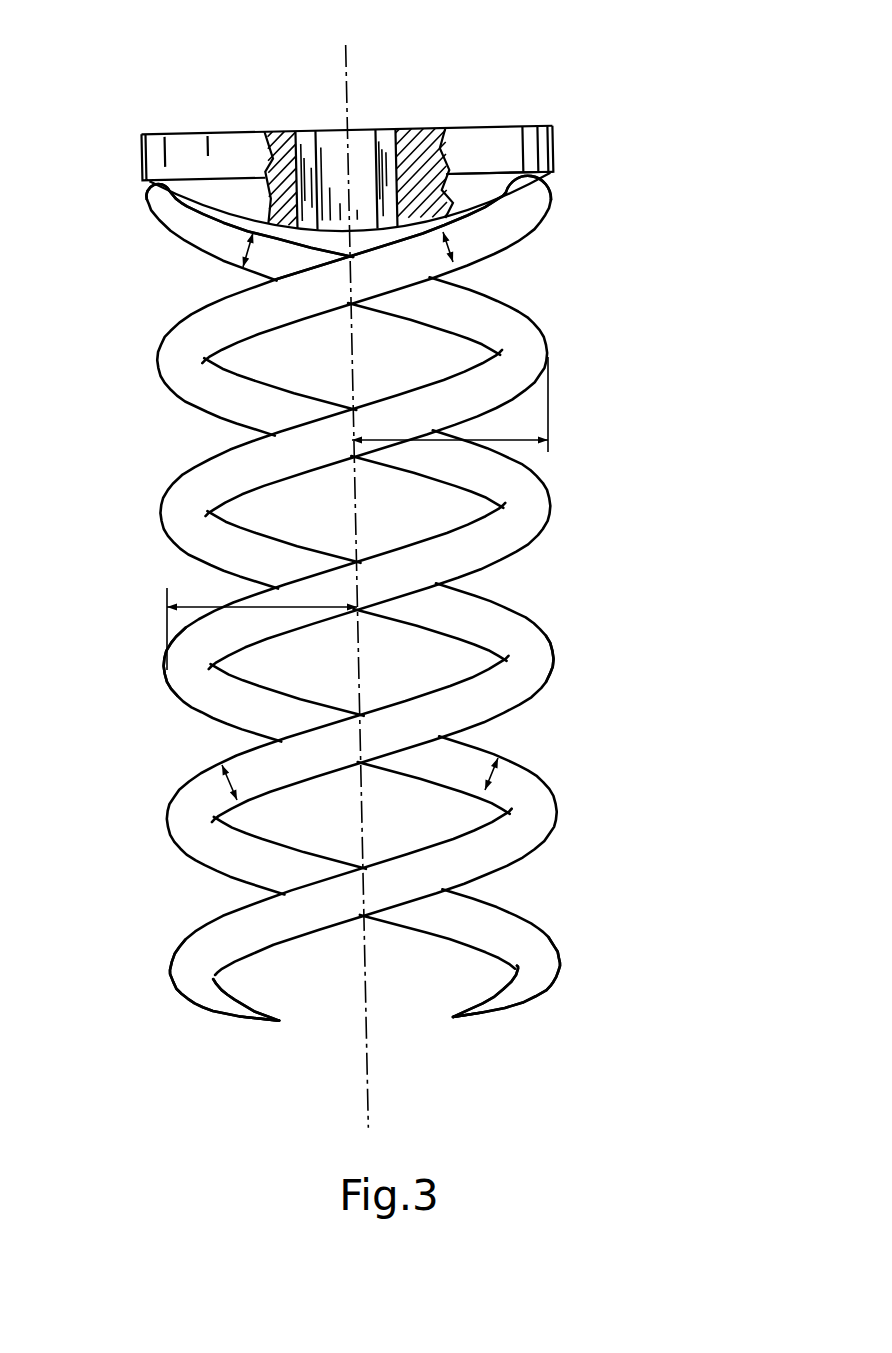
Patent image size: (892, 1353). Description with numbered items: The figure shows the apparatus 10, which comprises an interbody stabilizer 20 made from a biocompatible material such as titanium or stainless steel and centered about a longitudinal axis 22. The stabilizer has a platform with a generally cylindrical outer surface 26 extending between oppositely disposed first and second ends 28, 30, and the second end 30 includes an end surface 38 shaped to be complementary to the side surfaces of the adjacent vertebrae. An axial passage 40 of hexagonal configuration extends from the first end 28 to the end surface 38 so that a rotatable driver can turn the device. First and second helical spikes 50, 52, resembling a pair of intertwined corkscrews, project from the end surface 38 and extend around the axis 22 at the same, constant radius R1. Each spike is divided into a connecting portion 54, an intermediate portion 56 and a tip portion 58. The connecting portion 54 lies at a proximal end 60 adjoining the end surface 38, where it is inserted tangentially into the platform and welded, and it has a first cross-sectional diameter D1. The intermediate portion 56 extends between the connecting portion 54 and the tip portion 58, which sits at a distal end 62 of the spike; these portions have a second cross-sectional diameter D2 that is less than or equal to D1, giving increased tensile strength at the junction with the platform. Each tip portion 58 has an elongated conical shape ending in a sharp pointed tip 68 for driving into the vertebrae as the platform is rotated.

The apparatus 10 is at (627, 62).
The interbody stabilizer 20 is at (553, 160).
The longitudinal axis 22 is at (345, 66).
The generally cylindrical outer surface 26 is at (556, 140).
The first end 28 is at (532, 127).
The second end 30 is at (547, 174).
The end surface 38 is at (478, 192).
The axial passage 40 is at (364, 150).
The first helical spike 50 is at (191, 855).
The second helical spike 52 is at (558, 818).
The connecting portion 54 is at (515, 235).
The intermediate portion 56 is at (183, 672).
The tip portion 58 is at (497, 997).
The proximal end 60 is at (497, 230).
The distal end 62 is at (483, 1008).
The sharp pointed tip 68 is at (453, 1018).
The first cross-sectional diameter D1 is at (458, 268).
The second cross-sectional diameter D2 is at (223, 790).
The radius R1 is at (549, 458).